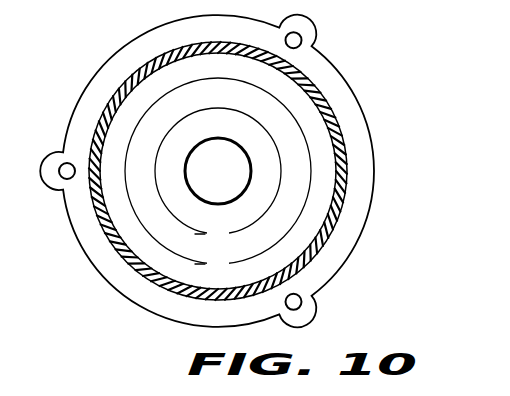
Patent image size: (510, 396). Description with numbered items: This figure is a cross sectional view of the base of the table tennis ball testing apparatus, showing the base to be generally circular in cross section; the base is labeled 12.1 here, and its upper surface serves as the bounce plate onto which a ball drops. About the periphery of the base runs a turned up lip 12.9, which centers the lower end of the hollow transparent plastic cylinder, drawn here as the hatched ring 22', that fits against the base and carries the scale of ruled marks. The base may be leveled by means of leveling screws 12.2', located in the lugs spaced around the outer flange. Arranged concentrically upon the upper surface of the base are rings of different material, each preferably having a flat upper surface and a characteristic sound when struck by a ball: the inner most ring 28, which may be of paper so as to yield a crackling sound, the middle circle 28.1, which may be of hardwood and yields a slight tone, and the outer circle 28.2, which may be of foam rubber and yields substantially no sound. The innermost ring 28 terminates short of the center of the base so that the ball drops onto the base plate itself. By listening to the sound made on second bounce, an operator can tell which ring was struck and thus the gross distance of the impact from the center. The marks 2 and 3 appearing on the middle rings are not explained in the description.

The turned up lip 12.9 is at (115, 275).
The leveling screws 12.2' is at (160, 171).
The sealing ring 22' is at (197, 166).
The outer circle 28.2 is at (240, 77).
The middle circle 28.1 is at (238, 102).
The inner most ring 28 is at (232, 134).
The central bore 12.1 is at (234, 172).
The section line 2 is at (212, 234).
The section line 3 is at (212, 264).